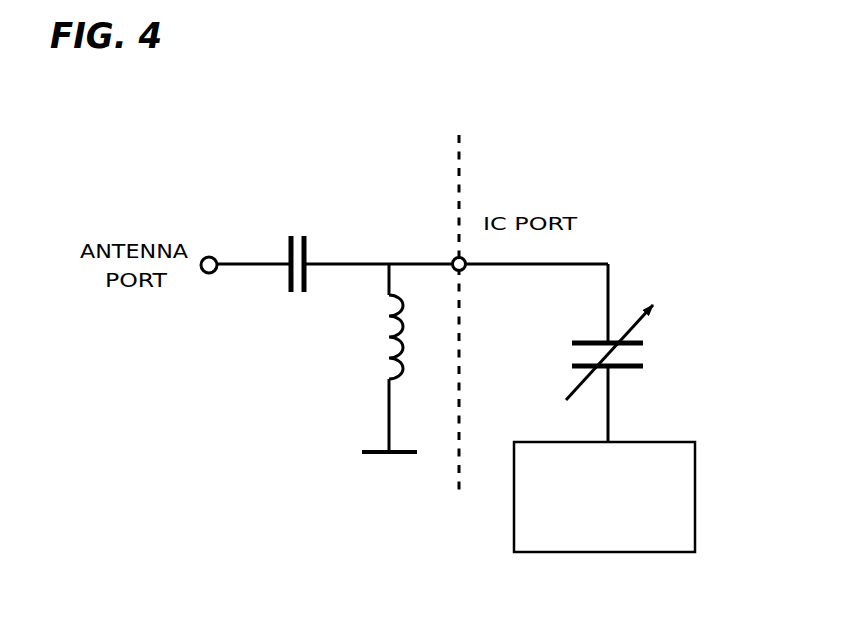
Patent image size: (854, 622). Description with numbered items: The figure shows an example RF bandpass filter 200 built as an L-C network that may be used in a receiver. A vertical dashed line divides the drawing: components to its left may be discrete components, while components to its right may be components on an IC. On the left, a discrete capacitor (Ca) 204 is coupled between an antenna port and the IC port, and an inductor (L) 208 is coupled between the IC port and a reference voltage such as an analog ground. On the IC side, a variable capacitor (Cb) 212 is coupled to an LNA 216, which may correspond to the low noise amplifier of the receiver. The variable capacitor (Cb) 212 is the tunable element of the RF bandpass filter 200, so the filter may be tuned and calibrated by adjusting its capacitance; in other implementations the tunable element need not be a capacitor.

The RF bandpass filter 200 is at (343, 192).
The discrete capacitor (Ca) 204 is at (307, 243).
The inductor (L) 208 is at (375, 367).
The variable capacitor (Cb) 212 is at (580, 342).
The LNA 216 is at (605, 552).